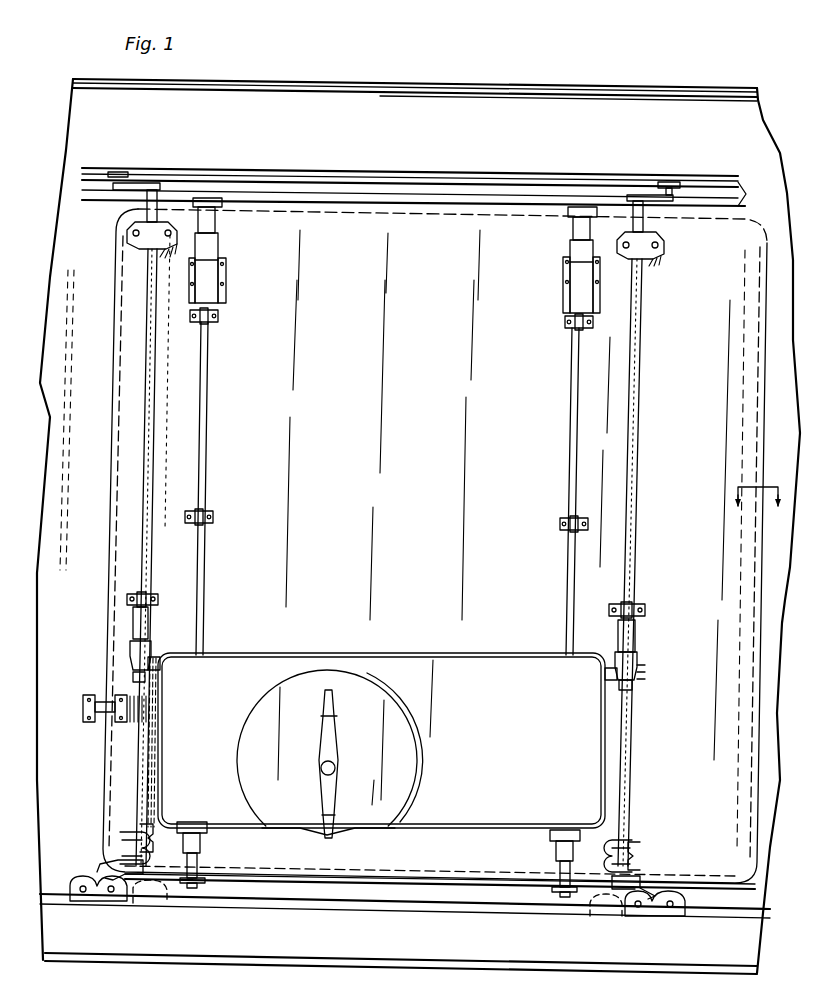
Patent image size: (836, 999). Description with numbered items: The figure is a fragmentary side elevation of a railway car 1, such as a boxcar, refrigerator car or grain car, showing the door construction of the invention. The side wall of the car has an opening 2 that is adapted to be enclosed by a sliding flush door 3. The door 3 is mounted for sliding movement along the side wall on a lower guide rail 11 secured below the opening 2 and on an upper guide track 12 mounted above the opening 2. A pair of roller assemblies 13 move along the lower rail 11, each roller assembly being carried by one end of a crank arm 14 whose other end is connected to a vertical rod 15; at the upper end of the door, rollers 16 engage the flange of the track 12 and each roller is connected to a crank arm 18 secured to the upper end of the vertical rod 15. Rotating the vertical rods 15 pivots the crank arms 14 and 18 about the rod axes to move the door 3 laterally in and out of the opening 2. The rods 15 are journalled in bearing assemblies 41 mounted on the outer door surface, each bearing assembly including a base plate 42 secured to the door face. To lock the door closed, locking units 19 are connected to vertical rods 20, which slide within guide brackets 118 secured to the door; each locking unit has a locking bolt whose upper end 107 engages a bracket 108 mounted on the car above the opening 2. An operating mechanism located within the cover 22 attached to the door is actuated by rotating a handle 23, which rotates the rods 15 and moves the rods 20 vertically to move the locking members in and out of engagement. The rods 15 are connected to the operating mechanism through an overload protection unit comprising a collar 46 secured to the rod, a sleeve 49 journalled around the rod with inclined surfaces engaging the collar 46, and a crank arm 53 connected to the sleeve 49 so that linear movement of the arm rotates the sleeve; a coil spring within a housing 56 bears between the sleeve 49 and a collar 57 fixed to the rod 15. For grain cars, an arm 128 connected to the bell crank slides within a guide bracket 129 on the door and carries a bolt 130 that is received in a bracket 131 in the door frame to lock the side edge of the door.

The railway car 1 is at (476, 93).
The opening 2 is at (758, 510).
The sliding flush door 3 is at (747, 234).
The lower guide rail 11 is at (740, 915).
The upper guide track 12 is at (713, 184).
The roller assemblies 13 is at (70, 876).
The crank arm 14 is at (107, 870).
The vertical rod 15 is at (136, 764).
The rollers 16 is at (120, 172).
The crank arm 18 is at (158, 182).
The locking units 19 is at (233, 242).
The vertical rods 20 is at (202, 573).
The cover 22 is at (420, 664).
The handle 23 is at (331, 748).
The bearing assemblies 41 is at (133, 246).
The base plate 42 is at (120, 835).
The collar 46 is at (133, 677).
The sleeve 49 is at (137, 668).
The crank arm 53 is at (160, 661).
The housing 56 is at (133, 626).
The collar 57 is at (133, 606).
The upper end 107 is at (210, 198).
The bracket 108 is at (222, 213).
The guide brackets 118 is at (208, 322).
The arm 128 is at (147, 708).
The guide bracket 129 is at (128, 704).
The bolt 130 is at (110, 712).
The bracket 131 is at (83, 708).